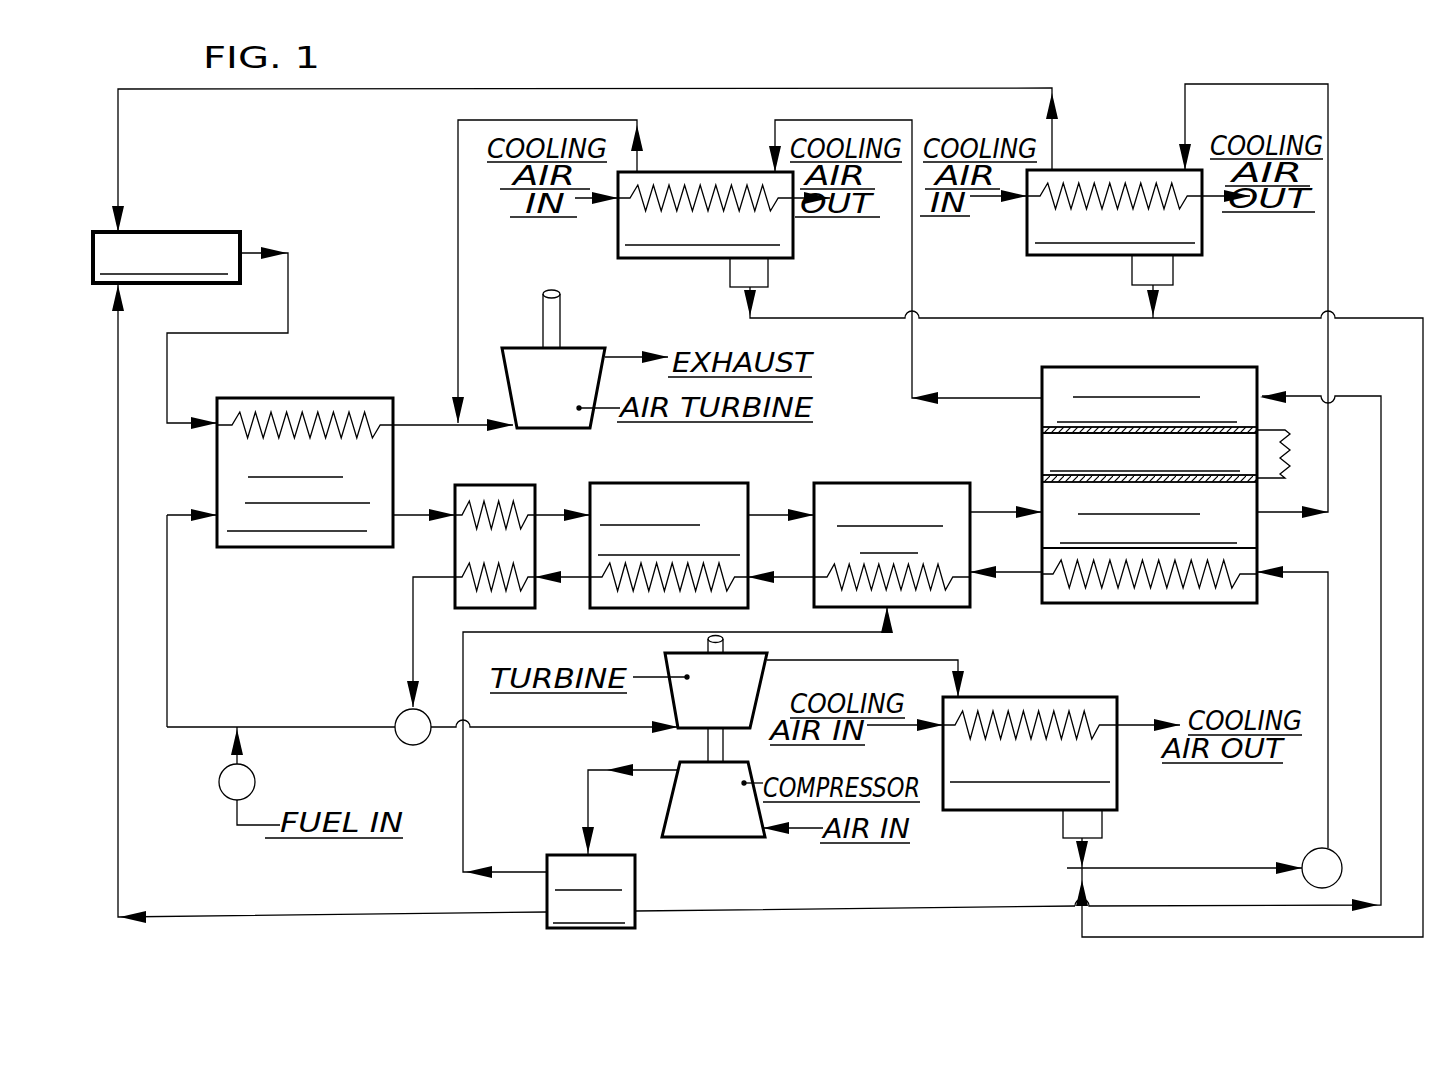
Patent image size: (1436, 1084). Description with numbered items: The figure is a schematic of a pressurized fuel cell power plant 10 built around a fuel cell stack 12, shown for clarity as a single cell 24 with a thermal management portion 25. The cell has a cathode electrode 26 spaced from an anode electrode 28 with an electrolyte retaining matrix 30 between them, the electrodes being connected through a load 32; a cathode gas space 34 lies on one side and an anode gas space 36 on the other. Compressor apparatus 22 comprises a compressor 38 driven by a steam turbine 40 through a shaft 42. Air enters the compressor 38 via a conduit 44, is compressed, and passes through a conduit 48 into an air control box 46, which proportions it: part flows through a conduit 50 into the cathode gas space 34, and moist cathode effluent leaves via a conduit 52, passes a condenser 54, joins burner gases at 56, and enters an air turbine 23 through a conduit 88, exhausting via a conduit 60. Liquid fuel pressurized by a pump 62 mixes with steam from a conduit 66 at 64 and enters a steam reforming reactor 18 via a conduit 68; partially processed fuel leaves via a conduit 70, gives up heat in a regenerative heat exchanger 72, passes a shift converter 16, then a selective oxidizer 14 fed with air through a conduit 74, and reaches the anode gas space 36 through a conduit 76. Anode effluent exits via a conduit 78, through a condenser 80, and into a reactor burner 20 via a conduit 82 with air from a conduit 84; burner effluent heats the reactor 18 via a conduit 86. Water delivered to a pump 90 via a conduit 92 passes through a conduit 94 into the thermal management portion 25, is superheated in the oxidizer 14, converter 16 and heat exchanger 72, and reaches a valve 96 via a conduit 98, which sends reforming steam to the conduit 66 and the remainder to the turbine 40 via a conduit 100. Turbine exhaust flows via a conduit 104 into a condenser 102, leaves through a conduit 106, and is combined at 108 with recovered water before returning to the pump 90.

The power plant 10 is at (1367, 135).
The fuel cell stack 12 is at (1154, 499).
The selective oxidizer 14 is at (880, 483).
The shift converter 16 is at (660, 485).
The steam reforming reactor 18 is at (305, 395).
The reactor burner 20 is at (183, 232).
The compressor apparatus 22 is at (672, 792).
The air turbine 23 is at (554, 392).
The cell 24 is at (1042, 468).
The thermal management portion 25 is at (1236, 605).
The cathode electrode 26 is at (1257, 431).
The anode electrode 28 is at (1257, 481).
The electrolyte retaining matrix 30 is at (1042, 443).
The load 32 is at (1290, 455).
The cathode gas space 34 is at (1222, 372).
The anode gas space 36 is at (1257, 528).
The compressor 38 is at (719, 816).
The steam turbine 40 is at (719, 698).
The shaft 42 is at (708, 745).
The conduit 44 is at (808, 828).
The air control box 46 is at (637, 888).
The conduit 48 is at (588, 812).
The conduit 50 is at (1381, 395).
The conduit 52 is at (912, 372).
The condenser 54 is at (700, 172).
The combining point 56 is at (534, 294).
The conduit 60 is at (633, 355).
The pump 62 is at (255, 782).
The mixing point 64 is at (237, 725).
The conduit 66 is at (300, 726).
The conduit 68 is at (167, 612).
The conduit 70 is at (420, 512).
The regenerative heat exchanger 72 is at (513, 490).
The conduit 74 is at (463, 783).
The conduit 76 is at (990, 520).
The conduit 78 is at (1328, 228).
The condenser 80 is at (1110, 172).
The conduit 82 is at (118, 166).
The conduit 84 is at (120, 338).
The conduit 86 is at (288, 287).
The conduit 88 is at (482, 426).
The pump 90 is at (1307, 852).
The conduit 92 is at (1180, 853).
The conduit 94 is at (1328, 660).
The valve 96 is at (392, 742).
The conduit 98 is at (413, 614).
The conduit 100 is at (585, 727).
The condenser 102 is at (1040, 700).
The conduit 104 is at (953, 660).
The conduit 106 is at (1085, 845).
The combining point 108 is at (1067, 868).